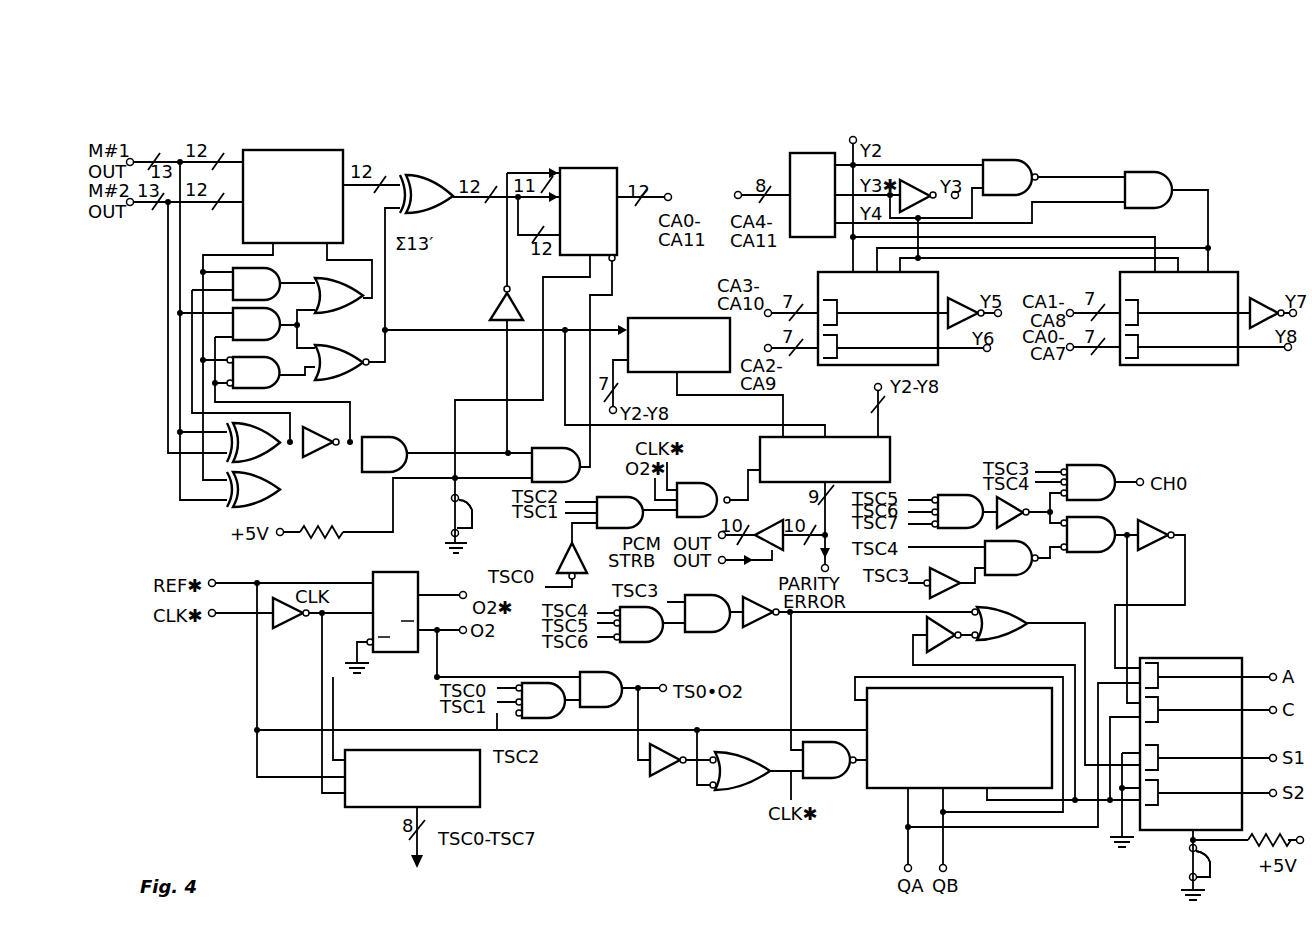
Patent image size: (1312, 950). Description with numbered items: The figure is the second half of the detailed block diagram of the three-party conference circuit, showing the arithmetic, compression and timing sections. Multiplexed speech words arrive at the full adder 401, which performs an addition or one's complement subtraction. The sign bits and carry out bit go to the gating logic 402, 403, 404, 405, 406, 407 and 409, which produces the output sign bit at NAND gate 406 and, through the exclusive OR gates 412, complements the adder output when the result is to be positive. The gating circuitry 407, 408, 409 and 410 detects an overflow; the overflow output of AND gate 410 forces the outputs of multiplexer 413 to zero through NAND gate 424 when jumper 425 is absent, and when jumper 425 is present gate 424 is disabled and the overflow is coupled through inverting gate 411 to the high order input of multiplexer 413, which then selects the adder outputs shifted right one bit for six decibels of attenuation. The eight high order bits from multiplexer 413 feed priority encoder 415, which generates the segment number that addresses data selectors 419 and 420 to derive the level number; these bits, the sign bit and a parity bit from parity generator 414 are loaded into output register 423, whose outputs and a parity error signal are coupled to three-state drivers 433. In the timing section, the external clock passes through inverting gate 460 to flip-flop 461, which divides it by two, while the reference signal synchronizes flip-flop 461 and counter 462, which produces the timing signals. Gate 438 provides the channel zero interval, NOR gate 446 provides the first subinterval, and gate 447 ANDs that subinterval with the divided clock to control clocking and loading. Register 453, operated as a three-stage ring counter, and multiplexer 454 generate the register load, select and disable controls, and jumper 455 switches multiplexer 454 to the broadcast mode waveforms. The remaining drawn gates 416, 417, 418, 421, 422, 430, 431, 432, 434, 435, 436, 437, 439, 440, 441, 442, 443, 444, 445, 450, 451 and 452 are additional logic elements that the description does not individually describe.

The full adder 401 is at (353, 143).
The gating logic 402 is at (278, 272).
The gating logic 403 is at (355, 309).
The gating logic 404 is at (282, 338).
The gating logic 405 is at (278, 386).
The NAND gate 406 is at (353, 376).
The gating logic 407 is at (273, 460).
The gating circuitry 408 is at (278, 503).
The gating logic 409 is at (320, 429).
The AND gate 410 is at (378, 438).
The inverting gate 411 is at (494, 303).
The exclusive OR gate 412 is at (436, 168).
The multiplexer 413 is at (600, 168).
The parity generator 414 is at (688, 320).
The priority encoder 415 is at (792, 158).
The NAND gate 416 is at (1026, 162).
The inverter 417 is at (915, 174).
The AND gate 418 is at (1153, 173).
The data selector 419 is at (936, 360).
The data selector 420 is at (1195, 363).
The inverter 421 is at (966, 297).
The inverter 422 is at (1265, 297).
The output register 423 is at (885, 437).
The NAND gate 424 is at (547, 452).
The jumper 425 is at (452, 505).
The inverter 430 is at (562, 560).
The AND gate 431 is at (618, 499).
The NAND gate 432 is at (695, 486).
The three-state drivers 433 is at (775, 510).
The inverter 434 is at (960, 592).
The AND gate 435 is at (958, 495).
The inverter 436 is at (1020, 519).
The NAND gate 437 is at (1025, 573).
The gate 438 is at (1085, 467).
The AND gate 439 is at (1110, 518).
The inverter 440 is at (1158, 532).
The AND gate 441 is at (630, 642).
The AND gate 442 is at (705, 632).
The inverter 443 is at (762, 627).
The inverter 444 is at (920, 628).
The NOR gate 445 is at (1018, 607).
The NOR gate 446 is at (563, 714).
The gate 447 is at (597, 672).
The inverter 450 is at (660, 775).
The NOR gate 451 is at (745, 753).
The NAND gate 452 is at (830, 778).
The register 453 is at (868, 717).
The multiplexer 454 is at (1222, 658).
The jumper 455 is at (1188, 852).
The inverting gate 460 is at (290, 628).
The flip-flop 461 is at (398, 571).
The counter 462 is at (480, 796).